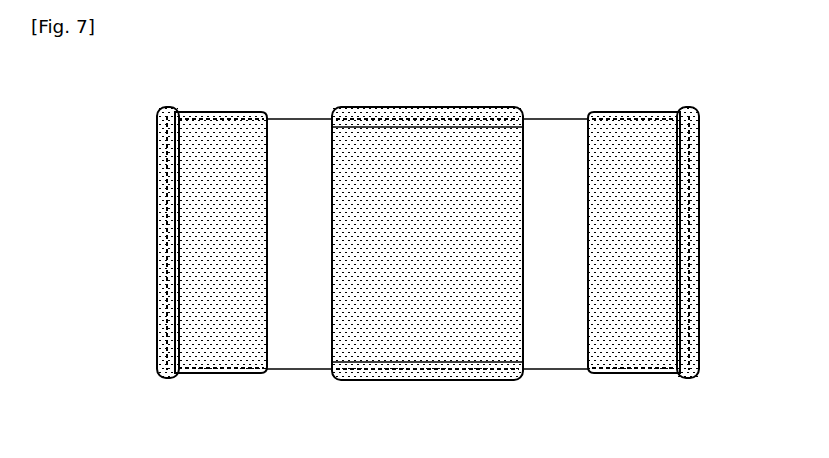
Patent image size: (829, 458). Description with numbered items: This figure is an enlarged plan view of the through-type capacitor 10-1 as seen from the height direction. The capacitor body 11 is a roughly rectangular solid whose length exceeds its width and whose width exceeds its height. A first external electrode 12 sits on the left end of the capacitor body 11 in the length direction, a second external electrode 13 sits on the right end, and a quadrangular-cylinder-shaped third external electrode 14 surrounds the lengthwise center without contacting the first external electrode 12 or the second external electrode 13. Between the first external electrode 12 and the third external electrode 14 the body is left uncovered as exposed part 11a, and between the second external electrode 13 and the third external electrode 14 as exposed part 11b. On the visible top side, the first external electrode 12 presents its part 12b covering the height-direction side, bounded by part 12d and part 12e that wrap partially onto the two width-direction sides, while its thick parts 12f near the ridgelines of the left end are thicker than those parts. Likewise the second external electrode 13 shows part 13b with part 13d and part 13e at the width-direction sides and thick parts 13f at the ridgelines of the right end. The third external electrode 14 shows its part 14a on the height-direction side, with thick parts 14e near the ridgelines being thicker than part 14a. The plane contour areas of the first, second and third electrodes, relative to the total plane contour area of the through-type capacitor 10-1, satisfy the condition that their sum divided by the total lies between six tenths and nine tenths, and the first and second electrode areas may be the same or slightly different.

The through-type capacitor 10-1 is at (426, 246).
The capacitor body 11 is at (427, 246).
The exposed part 11a is at (300, 352).
The exposed part 11b is at (553, 352).
The first external electrode 12 is at (183, 246).
The part of first external electrode 12b is at (203, 205).
The part of first external electrode 12d is at (219, 376).
The part of first external electrode 12e is at (215, 110).
The thick part 12f is at (163, 268).
The second external electrode 13 is at (670, 246).
The part of second external electrode 13b is at (648, 206).
The part of second external electrode 13d is at (633, 376).
The part of second external electrode 13e is at (633, 110).
The thick part 13f is at (693, 268).
The third external electrode 14 is at (427, 246).
The part of third external electrode 14a is at (378, 176).
The thick part 14e is at (458, 110).